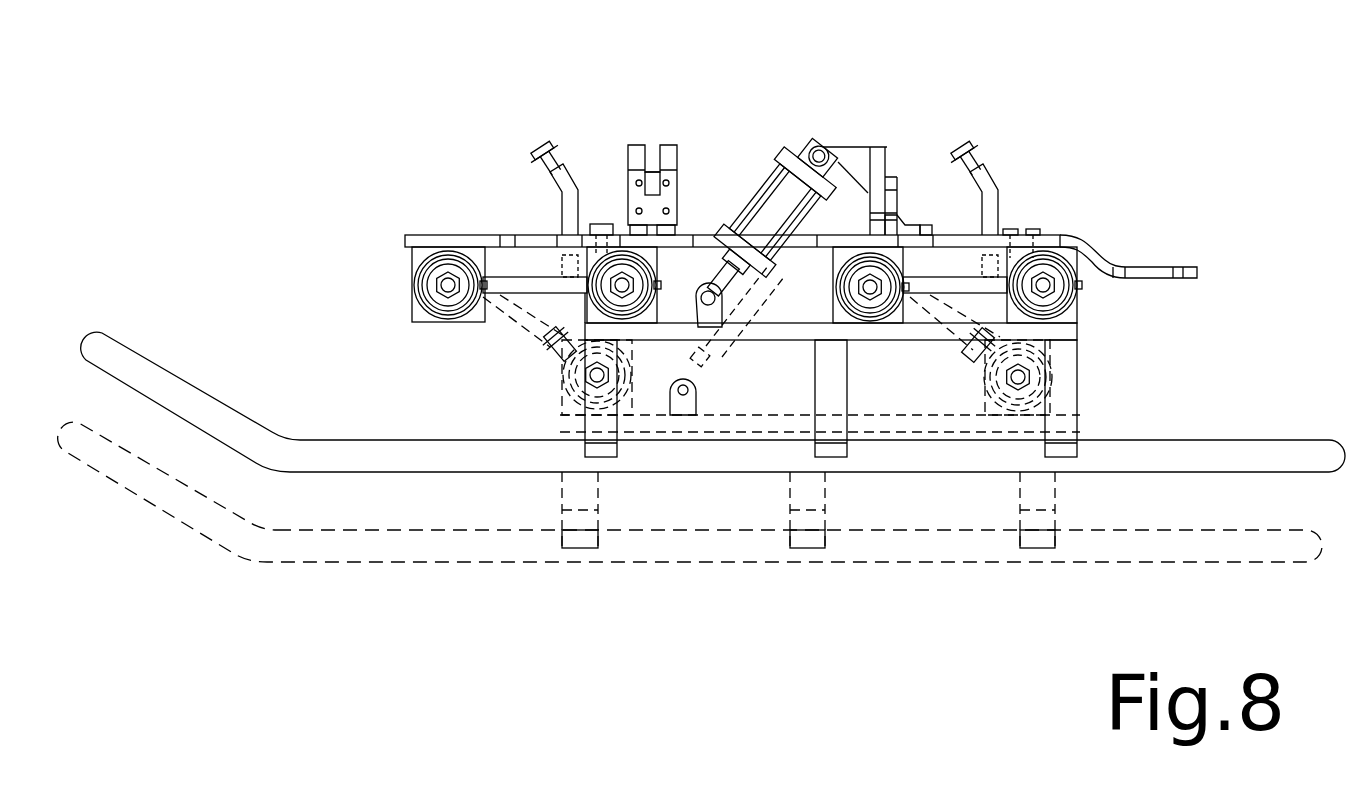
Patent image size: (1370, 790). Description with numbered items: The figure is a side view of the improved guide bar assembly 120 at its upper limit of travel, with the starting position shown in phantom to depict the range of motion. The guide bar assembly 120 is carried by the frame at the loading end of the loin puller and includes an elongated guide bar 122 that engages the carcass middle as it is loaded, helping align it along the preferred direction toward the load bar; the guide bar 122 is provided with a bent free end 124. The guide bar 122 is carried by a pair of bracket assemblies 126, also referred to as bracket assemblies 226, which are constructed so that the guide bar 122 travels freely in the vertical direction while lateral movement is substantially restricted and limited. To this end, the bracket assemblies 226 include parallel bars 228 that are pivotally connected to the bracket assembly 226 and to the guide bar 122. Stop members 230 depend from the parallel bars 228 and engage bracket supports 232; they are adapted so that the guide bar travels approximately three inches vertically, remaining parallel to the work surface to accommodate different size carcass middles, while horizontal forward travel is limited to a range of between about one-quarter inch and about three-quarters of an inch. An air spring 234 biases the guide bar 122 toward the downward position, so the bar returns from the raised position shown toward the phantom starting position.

The guide bar assembly 120 is at (754, 294).
The guide bar 122 is at (345, 445).
The bent free end 124 is at (128, 358).
The bracket assemblies 126 is at (1203, 372).
The bracket assemblies 226 is at (395, 283).
The parallel bars 228 is at (516, 287).
The stop members 230 is at (572, 192).
The bracket supports 232 is at (537, 240).
The air spring 234 is at (825, 145).